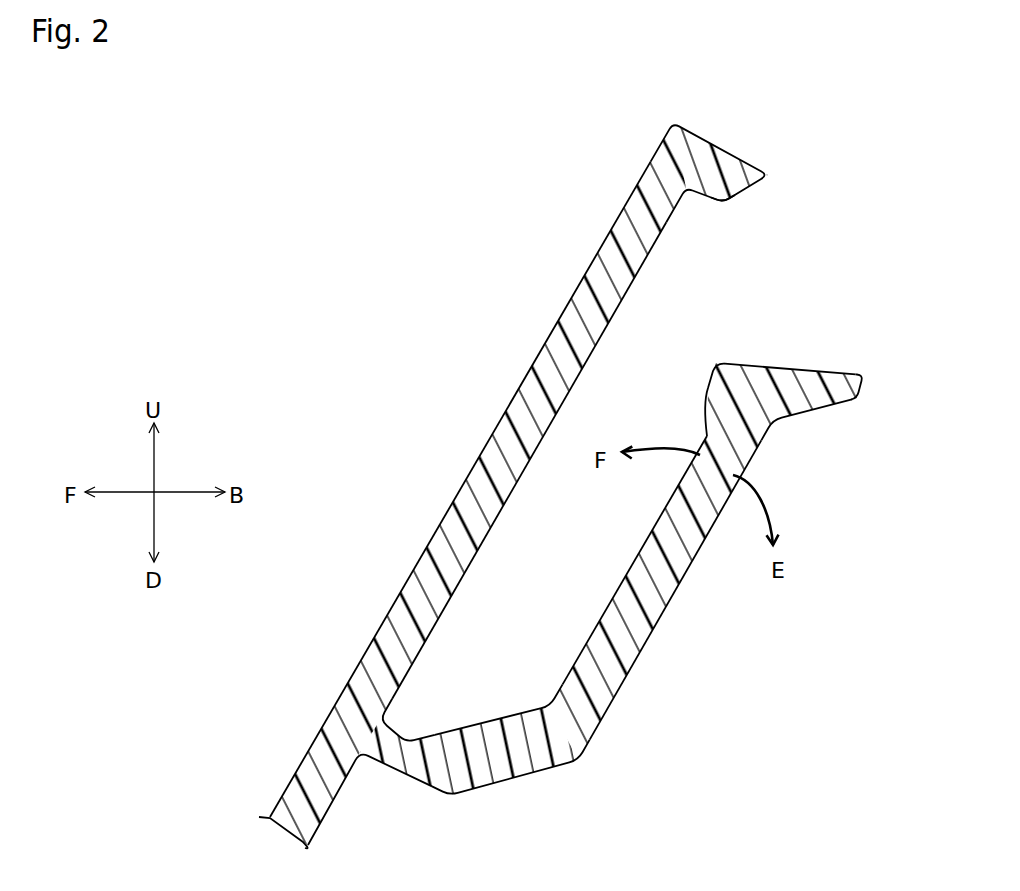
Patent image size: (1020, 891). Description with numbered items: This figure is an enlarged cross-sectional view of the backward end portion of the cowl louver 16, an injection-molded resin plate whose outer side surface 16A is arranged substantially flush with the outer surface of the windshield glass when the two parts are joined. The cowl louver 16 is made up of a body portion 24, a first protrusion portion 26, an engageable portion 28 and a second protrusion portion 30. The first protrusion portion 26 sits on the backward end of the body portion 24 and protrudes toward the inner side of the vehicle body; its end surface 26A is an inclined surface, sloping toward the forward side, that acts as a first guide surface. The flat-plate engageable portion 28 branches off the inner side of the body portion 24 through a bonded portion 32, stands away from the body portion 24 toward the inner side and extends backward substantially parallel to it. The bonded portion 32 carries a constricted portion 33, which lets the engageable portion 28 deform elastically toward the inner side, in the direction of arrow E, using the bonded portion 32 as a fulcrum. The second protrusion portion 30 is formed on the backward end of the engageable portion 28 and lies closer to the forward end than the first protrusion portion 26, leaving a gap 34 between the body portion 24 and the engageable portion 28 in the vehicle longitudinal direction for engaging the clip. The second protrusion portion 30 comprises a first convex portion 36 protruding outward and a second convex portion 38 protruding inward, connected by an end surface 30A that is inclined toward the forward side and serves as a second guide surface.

The cowl louver 16 is at (330, 672).
The outer side surface 16A is at (315, 733).
The body portion 24 is at (315, 790).
The first protrusion portion 26 is at (717, 170).
The end surface 26A is at (748, 197).
The engageable portion 28 is at (676, 602).
The second protrusion portion 30 is at (783, 395).
The end surface 30A is at (787, 370).
The bonded portion 32 is at (487, 751).
The constricted portion 33 is at (390, 752).
The gap 34 is at (731, 307).
The first convex portion 36 is at (715, 374).
The second convex portion 38 is at (860, 383).